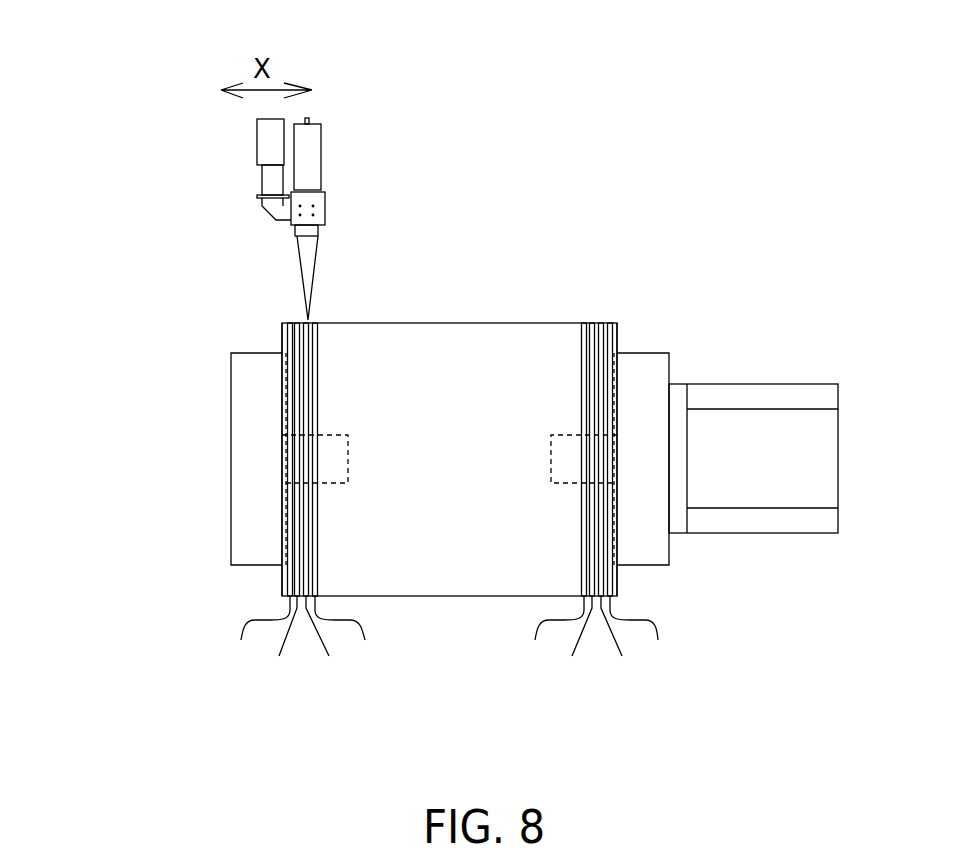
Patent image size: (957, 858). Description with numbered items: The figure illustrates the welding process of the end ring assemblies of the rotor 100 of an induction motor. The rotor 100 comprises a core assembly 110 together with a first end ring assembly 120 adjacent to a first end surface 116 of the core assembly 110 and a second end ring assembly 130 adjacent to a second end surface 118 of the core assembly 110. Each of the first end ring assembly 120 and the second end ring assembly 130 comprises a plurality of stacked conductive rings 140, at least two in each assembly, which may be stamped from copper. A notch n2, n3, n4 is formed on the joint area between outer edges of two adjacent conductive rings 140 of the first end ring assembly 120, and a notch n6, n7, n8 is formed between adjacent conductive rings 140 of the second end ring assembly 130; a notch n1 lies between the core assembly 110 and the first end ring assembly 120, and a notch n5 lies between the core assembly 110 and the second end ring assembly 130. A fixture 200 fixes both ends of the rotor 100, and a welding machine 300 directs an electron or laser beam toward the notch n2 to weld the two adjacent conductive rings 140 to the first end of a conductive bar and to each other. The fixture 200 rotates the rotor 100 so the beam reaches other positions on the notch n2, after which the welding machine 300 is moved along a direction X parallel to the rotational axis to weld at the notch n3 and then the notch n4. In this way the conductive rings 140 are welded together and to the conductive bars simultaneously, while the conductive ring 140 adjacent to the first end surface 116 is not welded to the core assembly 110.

The rotor 100 is at (557, 221).
The core assembly 110 is at (468, 308).
The first end surface 116 is at (348, 388).
The second end surface 118 is at (555, 388).
The first end ring assembly 120 is at (128, 274).
The second end ring assembly 130 is at (788, 285).
The conductive ring 140 is at (448, 392).
The fixture 200 is at (815, 580).
The welding machine 300 is at (370, 145).
The notch n1 is at (347, 632).
The notch n2 is at (324, 641).
The notch n3 is at (285, 641).
The notch n4 is at (261, 632).
The notch n5 is at (556, 632).
The notch n6 is at (580, 641).
The notch n7 is at (618, 641).
The notch n8 is at (641, 631).